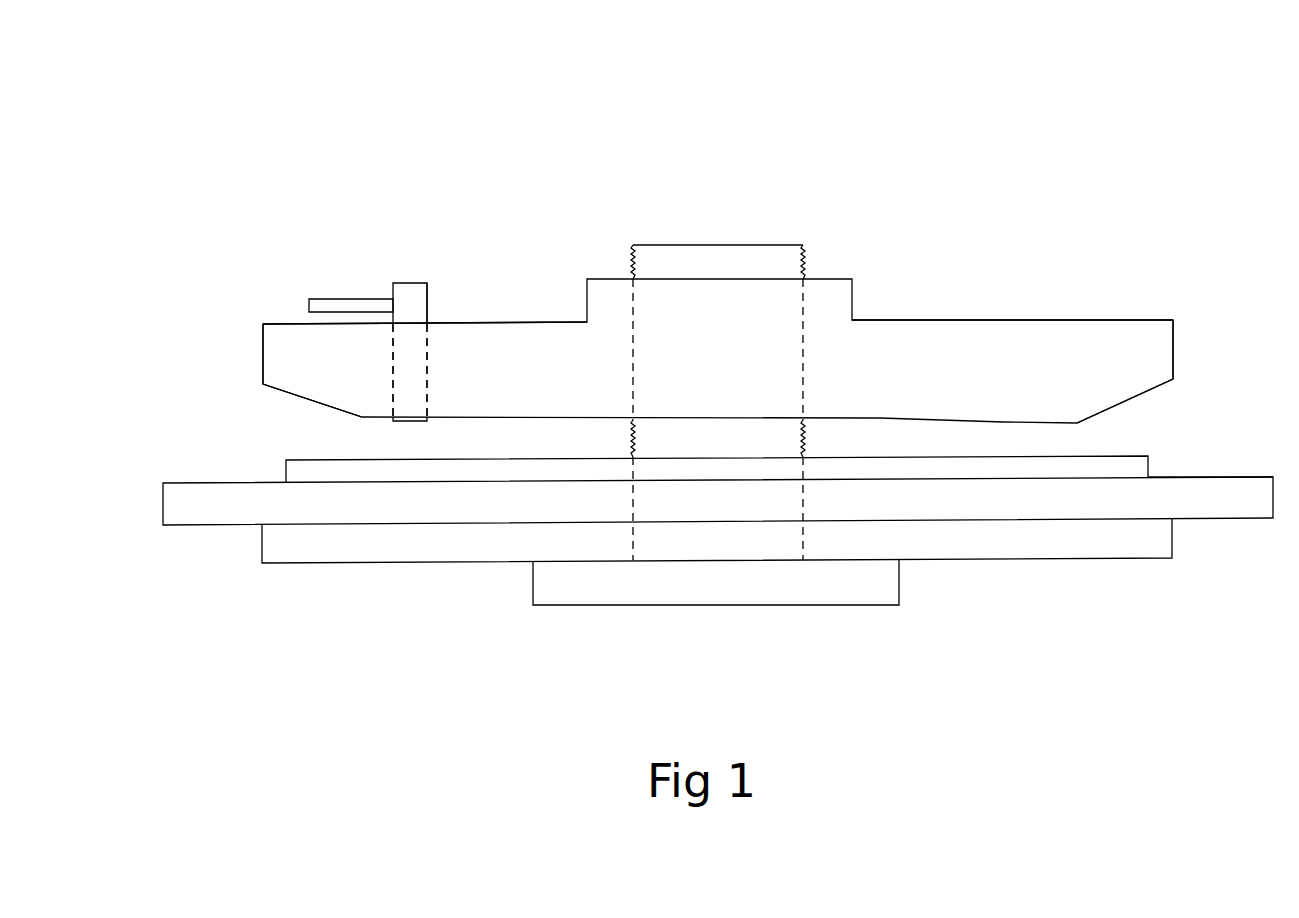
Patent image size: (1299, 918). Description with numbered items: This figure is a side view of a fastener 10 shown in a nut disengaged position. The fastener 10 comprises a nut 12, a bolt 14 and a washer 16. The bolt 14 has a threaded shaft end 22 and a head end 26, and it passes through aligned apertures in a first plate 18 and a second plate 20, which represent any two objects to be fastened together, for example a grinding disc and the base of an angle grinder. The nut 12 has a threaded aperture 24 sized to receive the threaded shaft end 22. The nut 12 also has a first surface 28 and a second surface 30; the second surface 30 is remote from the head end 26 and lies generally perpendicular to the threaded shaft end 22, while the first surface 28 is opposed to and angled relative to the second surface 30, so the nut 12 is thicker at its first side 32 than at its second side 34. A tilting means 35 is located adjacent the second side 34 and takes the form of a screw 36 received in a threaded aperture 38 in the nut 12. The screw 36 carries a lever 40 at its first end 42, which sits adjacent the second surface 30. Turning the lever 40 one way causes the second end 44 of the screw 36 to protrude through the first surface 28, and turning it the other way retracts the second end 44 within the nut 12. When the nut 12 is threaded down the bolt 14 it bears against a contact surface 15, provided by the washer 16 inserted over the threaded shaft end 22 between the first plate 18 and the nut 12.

The fastener 10 is at (1052, 115).
The nut 12 is at (978, 337).
The bolt 14 is at (663, 446).
The contact surface 15 is at (1063, 456).
The washer 16 is at (1123, 468).
The first plate 18 is at (210, 515).
The second plate 20 is at (340, 545).
The threaded shaft end 22 is at (632, 260).
The threaded aperture 24 is at (803, 322).
The head end 26 is at (867, 580).
The first surface 28 is at (1005, 422).
The second surface 30 is at (1092, 317).
The first side 32 is at (1177, 313).
The second side 34 is at (258, 320).
The tilting means 35 is at (375, 257).
The screw 36 is at (405, 298).
The threaded aperture 38 is at (420, 370).
The lever 40 is at (327, 293).
The first end 42 is at (430, 285).
The second end 44 is at (362, 417).